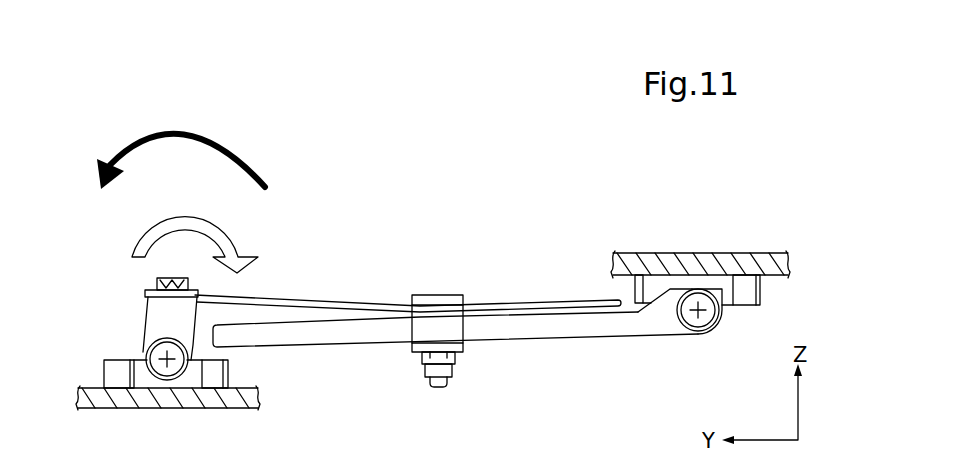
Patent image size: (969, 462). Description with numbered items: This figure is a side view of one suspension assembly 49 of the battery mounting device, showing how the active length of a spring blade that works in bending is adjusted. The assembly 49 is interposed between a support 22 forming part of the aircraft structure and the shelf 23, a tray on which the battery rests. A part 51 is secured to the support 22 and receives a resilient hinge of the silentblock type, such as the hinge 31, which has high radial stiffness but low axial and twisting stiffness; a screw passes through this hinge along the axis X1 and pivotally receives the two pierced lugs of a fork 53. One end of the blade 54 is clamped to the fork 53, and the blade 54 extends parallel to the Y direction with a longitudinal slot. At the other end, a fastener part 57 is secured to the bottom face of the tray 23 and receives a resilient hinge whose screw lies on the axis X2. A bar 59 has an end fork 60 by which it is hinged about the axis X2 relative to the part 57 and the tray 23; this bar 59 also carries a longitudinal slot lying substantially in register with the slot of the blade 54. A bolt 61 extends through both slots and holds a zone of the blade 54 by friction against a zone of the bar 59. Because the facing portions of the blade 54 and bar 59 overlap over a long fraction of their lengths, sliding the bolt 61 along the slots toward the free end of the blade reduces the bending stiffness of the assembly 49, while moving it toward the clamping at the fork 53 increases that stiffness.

The support 22 is at (84, 396).
The shelf 23 is at (778, 253).
The silentblock hinge 31 is at (720, 313).
The assembly 49 is at (489, 190).
The part 51 is at (105, 359).
The fork 53 is at (150, 312).
The blade 54 is at (307, 308).
The fastener part 57 is at (641, 255).
The bar 59 is at (537, 328).
The end fork 60 is at (663, 313).
The bolt 61 is at (447, 293).
The axis X1 is at (167, 362).
The axis X2 is at (697, 313).